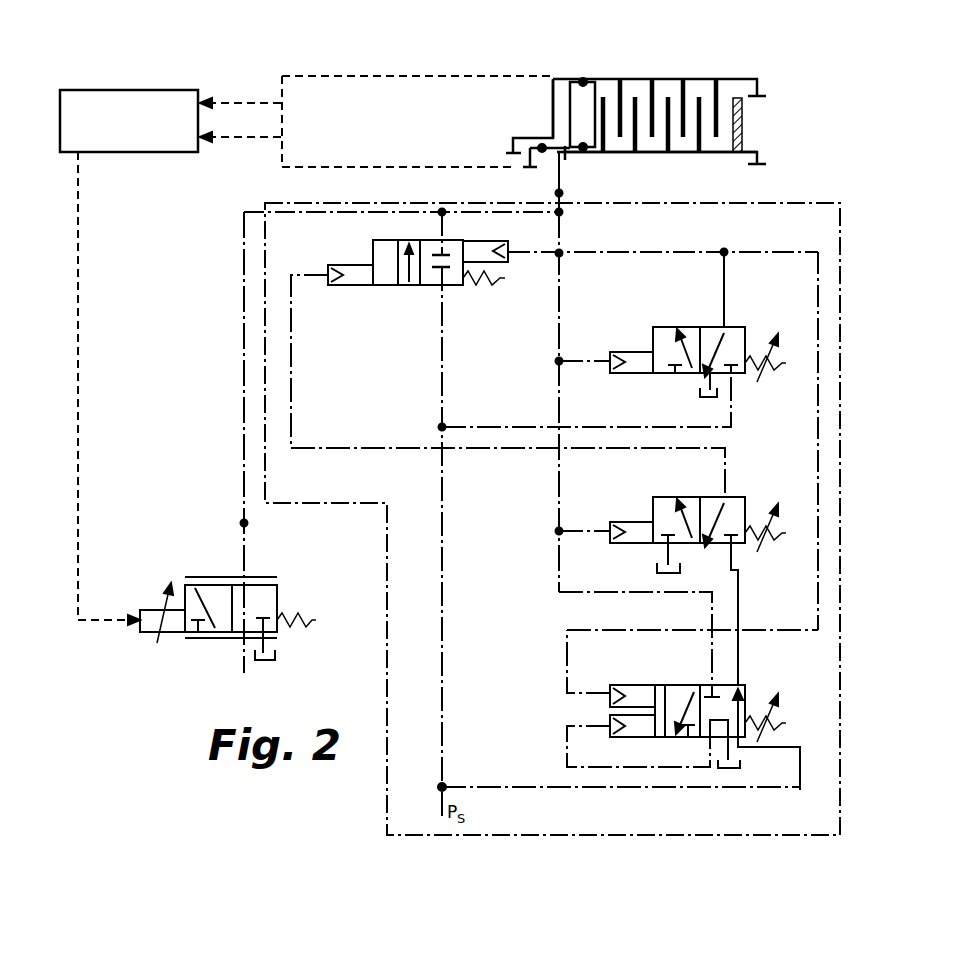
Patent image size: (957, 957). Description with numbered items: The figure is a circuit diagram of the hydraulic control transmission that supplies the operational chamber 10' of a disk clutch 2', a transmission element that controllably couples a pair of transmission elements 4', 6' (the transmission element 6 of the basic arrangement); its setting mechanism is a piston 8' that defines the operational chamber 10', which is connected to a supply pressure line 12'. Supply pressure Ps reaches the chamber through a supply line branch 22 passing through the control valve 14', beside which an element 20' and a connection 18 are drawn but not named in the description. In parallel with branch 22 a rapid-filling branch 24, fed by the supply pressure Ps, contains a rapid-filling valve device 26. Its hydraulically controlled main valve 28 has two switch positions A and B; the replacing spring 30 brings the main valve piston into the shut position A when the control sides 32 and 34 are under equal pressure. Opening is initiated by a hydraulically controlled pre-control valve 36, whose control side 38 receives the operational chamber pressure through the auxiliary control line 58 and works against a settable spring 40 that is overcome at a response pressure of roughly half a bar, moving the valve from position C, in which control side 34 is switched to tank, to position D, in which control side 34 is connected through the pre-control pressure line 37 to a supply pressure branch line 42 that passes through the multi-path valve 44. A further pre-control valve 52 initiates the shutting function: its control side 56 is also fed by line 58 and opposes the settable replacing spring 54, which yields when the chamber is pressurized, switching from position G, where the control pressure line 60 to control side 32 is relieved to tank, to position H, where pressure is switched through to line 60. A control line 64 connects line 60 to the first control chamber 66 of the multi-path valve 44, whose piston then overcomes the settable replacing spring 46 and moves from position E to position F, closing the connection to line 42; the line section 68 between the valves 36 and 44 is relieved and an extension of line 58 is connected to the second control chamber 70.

The disk clutch 2' is at (658, 111).
The transmission element 4' is at (660, 177).
The transmission element 6' is at (671, 87).
The piston 8' is at (607, 91).
The operational chamber 10' is at (531, 78).
The supply pressure line 12' is at (592, 182).
The control valve 14' is at (228, 576).
The electrical control line 18 is at (76, 490).
The controller 20' is at (129, 92).
The supply line branch 22 is at (248, 522).
The rapid-filling branch 24 is at (440, 570).
The rapid-filling valve device 26 is at (386, 530).
The main valve 28 is at (340, 245).
The replacing spring 30 is at (482, 282).
The control side 32 is at (486, 250).
The control side 34 is at (352, 278).
The pre-control valve 36 is at (745, 472).
The pre-control pressure line 37 is at (336, 450).
The control side 38 is at (634, 534).
The spring 40 is at (774, 538).
The supply pressure branch line 42 is at (558, 790).
The multi-path valve 44 is at (765, 672).
The replacing spring 46 is at (786, 722).
The pre-control valve 52 is at (762, 327).
The replacing spring 54 is at (774, 372).
The control side 56 is at (634, 364).
The auxiliary control line 58 is at (561, 240).
The control pressure line 60 is at (650, 254).
The control line 64 is at (812, 292).
The first control chamber 66 is at (632, 690).
The line section 68 is at (740, 600).
The second control chamber 70 is at (632, 728).
The transmission element 6 is at (586, 400).